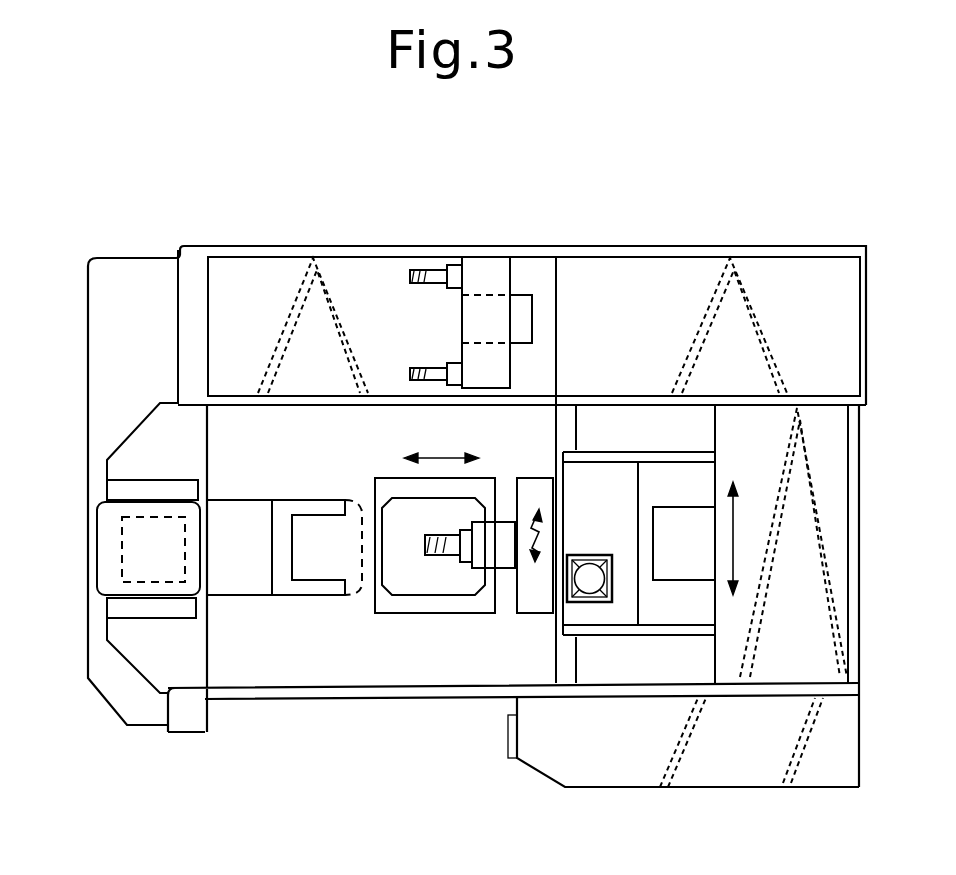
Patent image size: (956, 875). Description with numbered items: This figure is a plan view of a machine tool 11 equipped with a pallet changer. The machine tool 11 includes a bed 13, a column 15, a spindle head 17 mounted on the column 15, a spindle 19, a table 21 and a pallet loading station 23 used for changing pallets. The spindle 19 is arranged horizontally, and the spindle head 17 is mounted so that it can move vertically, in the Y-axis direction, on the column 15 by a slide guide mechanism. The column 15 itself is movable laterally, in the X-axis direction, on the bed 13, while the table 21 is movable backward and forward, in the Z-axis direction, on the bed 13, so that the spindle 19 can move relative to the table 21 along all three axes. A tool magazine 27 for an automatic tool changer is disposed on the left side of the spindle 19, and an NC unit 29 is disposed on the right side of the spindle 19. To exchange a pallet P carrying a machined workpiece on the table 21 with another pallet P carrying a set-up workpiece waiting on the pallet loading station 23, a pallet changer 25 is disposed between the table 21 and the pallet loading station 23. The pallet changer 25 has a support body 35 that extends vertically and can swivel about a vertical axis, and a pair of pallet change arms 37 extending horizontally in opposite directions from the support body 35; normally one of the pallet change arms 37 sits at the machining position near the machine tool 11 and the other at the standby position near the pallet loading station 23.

The machine tool 11 is at (580, 219).
The bed 13 is at (316, 700).
The column 15 is at (607, 612).
The spindle head 17 is at (528, 605).
The spindle 19 is at (480, 563).
The table 21 is at (415, 603).
The pallet loading station 23 is at (124, 610).
The pallet changer 25 is at (228, 606).
The tool magazine 27 is at (490, 280).
The NC unit 29 is at (745, 762).
The support body 35 is at (239, 510).
The pallet change arms 37 is at (327, 592).